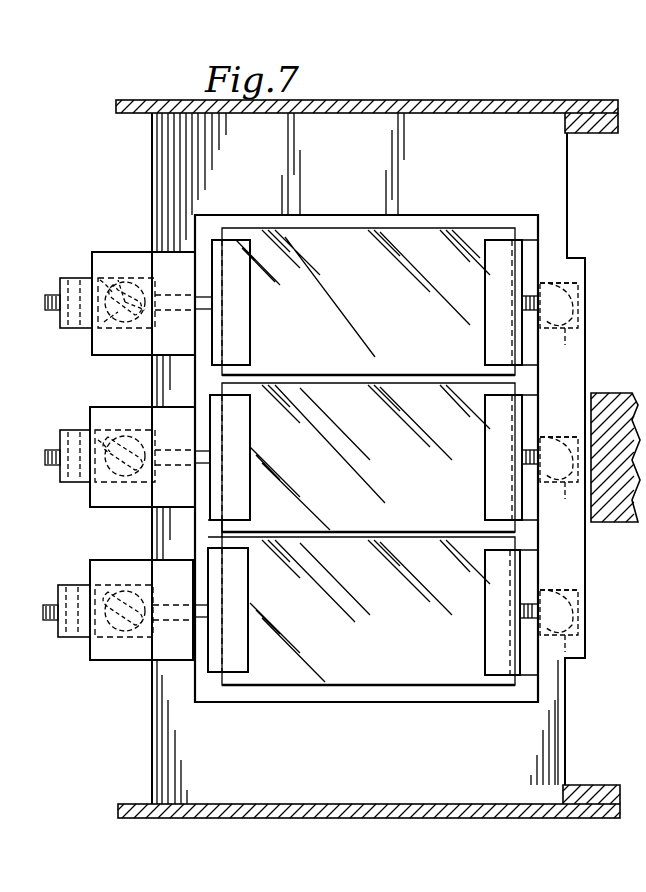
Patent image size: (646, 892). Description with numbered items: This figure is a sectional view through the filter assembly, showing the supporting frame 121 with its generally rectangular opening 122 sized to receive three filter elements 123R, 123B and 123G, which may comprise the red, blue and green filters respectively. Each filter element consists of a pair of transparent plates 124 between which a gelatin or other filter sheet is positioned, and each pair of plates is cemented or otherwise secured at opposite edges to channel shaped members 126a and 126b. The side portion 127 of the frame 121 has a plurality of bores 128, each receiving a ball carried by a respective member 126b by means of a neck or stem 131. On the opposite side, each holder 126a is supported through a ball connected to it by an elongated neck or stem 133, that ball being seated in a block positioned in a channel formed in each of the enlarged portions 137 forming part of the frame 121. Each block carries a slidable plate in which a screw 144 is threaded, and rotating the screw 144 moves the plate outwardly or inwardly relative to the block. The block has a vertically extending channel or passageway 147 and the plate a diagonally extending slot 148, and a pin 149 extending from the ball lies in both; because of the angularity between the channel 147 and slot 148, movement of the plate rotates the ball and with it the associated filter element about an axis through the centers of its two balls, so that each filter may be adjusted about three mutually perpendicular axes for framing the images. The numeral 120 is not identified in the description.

The connecting member 120 is at (222, 528).
The supporting frame 121 is at (556, 725).
The rectangularly shaped opening 122 is at (538, 357).
The red filter element 123R is at (530, 232).
The blue filter element 123B is at (528, 402).
The green filter element 123G is at (528, 562).
The transparent plates 124 is at (432, 240).
The channel shaped member 126a is at (262, 335).
The channel shaped member 126b is at (500, 335).
The side portion 127 is at (560, 332).
The bores 128 is at (565, 290).
The neck or stem 131 is at (522, 300).
The elongated neck or stem 133 is at (202, 300).
The enlarged portions 137 is at (118, 355).
The screw 144 is at (48, 303).
The vertically extending channel or passageway 147 is at (128, 275).
The diagonally extending slot 148 is at (102, 280).
The pin 149 is at (106, 322).